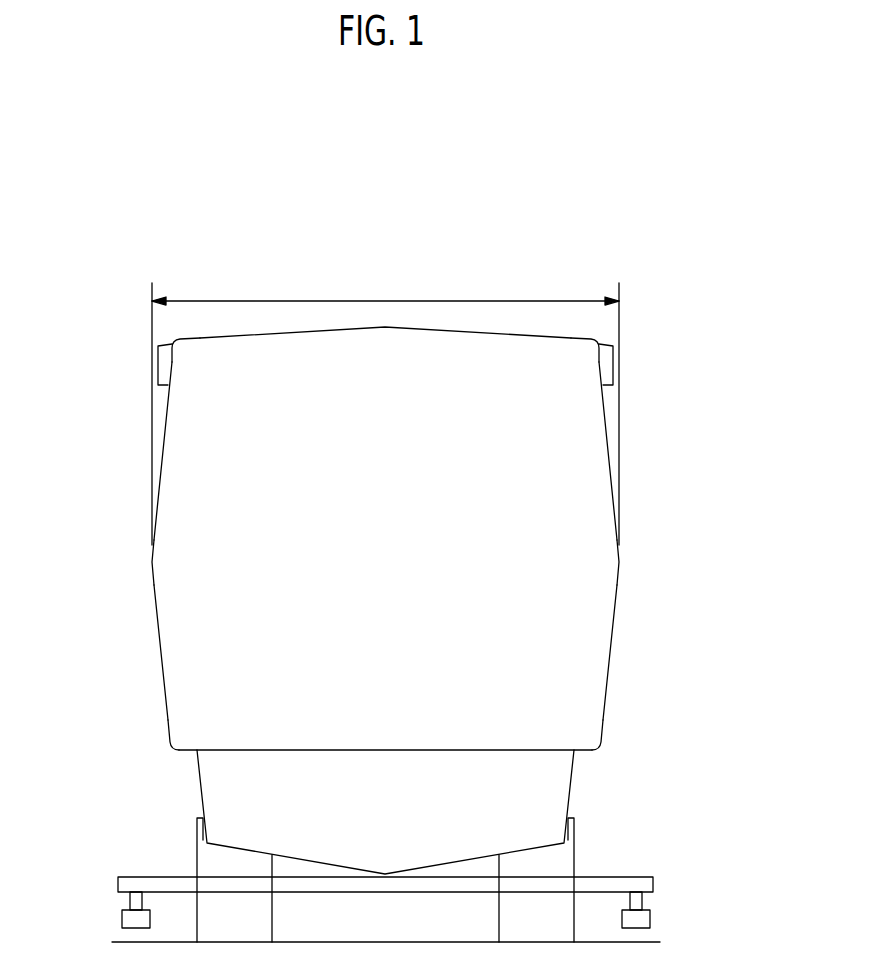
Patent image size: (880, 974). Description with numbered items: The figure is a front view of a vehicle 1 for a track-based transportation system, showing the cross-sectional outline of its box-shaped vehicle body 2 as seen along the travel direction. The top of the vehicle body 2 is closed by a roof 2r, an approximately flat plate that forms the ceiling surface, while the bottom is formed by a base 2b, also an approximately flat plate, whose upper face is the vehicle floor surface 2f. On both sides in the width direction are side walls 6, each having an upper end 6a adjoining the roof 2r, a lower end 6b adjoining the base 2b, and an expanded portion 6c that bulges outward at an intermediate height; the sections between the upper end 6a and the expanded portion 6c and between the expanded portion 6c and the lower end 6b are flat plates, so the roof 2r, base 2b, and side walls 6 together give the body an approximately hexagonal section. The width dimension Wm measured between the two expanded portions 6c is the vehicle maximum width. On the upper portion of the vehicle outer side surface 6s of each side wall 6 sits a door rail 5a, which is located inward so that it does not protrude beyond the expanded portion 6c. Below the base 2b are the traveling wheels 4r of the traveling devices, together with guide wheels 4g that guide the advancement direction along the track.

The vehicle 1 is at (539, 333).
The vehicle body 2 is at (459, 329).
The roof 2r is at (316, 329).
The vehicle floor surface 2f is at (236, 750).
The base 2b is at (365, 750).
The door rail 5a is at (157, 378).
The side wall 6 is at (163, 456).
The upper end 6a is at (156, 350).
The expanded portion 6c is at (152, 563).
The vehicle outer side surface 6s is at (161, 661).
The lower end 6b is at (169, 740).
The traveling wheels 4r is at (197, 860).
The guide wheels 4g is at (122, 918).
The width dimension Wm is at (385, 407).